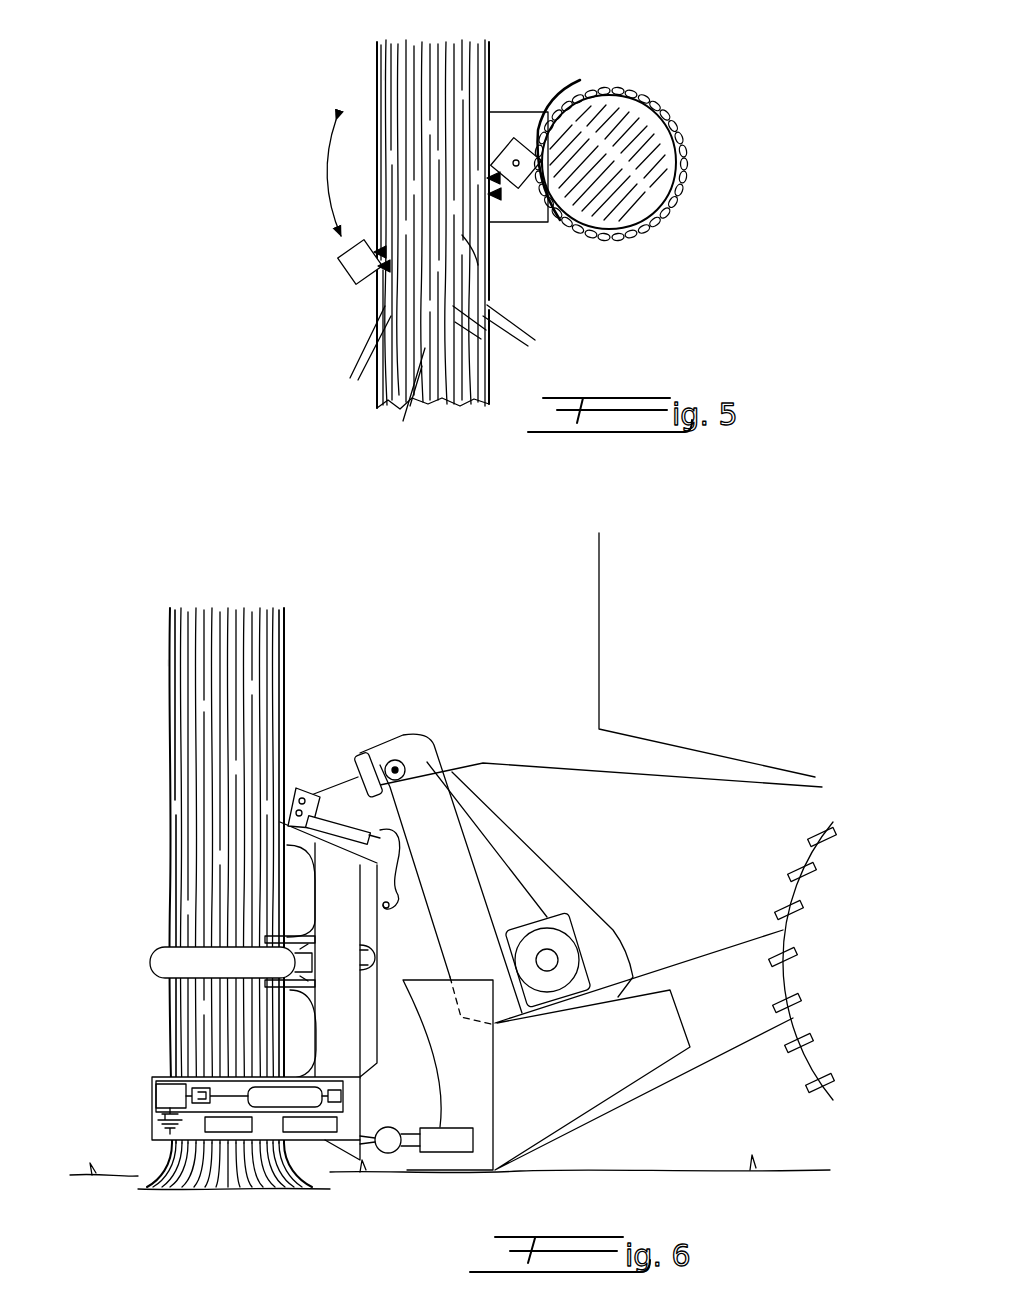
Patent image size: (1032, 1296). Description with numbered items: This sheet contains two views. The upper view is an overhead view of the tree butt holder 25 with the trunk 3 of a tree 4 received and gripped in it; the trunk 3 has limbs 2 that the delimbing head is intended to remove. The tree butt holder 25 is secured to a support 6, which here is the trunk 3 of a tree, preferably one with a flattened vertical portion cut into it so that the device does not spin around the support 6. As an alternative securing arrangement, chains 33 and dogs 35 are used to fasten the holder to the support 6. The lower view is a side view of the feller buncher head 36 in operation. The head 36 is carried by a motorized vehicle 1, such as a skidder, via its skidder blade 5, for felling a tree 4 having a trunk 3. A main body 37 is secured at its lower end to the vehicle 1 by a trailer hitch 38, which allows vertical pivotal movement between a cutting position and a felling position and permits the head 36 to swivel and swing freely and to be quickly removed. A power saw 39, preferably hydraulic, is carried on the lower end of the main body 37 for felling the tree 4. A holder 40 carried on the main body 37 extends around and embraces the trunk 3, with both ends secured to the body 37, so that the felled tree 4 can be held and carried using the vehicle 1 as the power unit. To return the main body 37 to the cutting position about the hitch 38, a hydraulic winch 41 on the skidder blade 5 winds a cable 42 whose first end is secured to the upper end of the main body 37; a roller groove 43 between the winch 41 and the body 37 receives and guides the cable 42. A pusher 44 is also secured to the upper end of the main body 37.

In FIG. 6, the motorized vehicle 1 is at (776, 858).
In FIG. 5, the limbs 2 is at (365, 352).
In FIG. 5, the trunk 3 is at (468, 88).
In FIG. 6, the trunk 3 is at (225, 745).
In FIG. 5, the tree 4 is at (378, 79).
In FIG. 6, the tree 4 is at (163, 664).
In FIG. 6, the skidder blade 5 is at (720, 1037).
In FIG. 5, the support 6 is at (648, 185).
In FIG. 5, the tree butt holder 25 is at (338, 287).
In FIG. 5, the chains 33 is at (660, 124).
In FIG. 5, the dogs 35 is at (543, 103).
In FIG. 6, the feller buncher head 36 is at (390, 714).
In FIG. 6, the main body 37 is at (338, 1025).
In FIG. 6, the trailer hitch 38 is at (390, 1153).
In FIG. 6, the power saw 39 is at (136, 1110).
In FIG. 6, the holder 40 is at (180, 962).
In FIG. 6, the hydraulic winch 41 is at (557, 950).
In FIG. 6, the cable 42 is at (337, 784).
In FIG. 6, the roller groove 43 is at (402, 762).
In FIG. 6, the pusher 44 is at (388, 890).